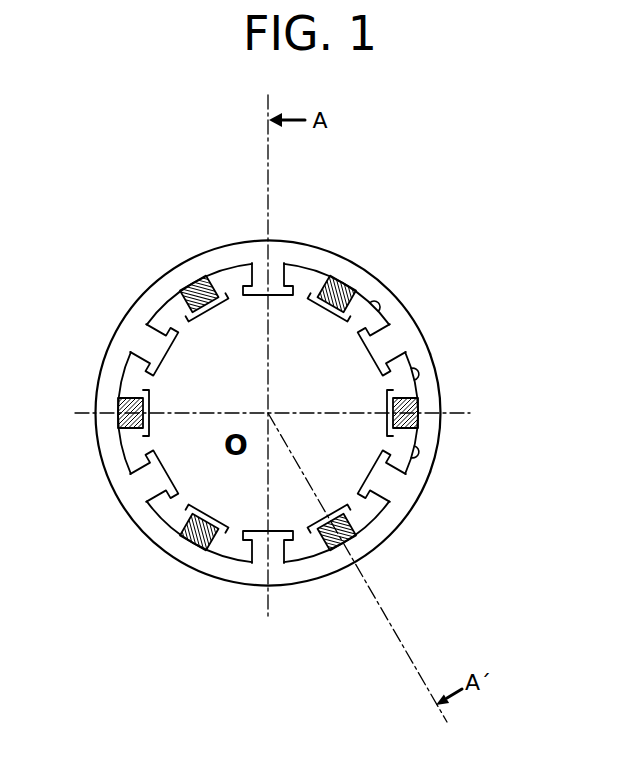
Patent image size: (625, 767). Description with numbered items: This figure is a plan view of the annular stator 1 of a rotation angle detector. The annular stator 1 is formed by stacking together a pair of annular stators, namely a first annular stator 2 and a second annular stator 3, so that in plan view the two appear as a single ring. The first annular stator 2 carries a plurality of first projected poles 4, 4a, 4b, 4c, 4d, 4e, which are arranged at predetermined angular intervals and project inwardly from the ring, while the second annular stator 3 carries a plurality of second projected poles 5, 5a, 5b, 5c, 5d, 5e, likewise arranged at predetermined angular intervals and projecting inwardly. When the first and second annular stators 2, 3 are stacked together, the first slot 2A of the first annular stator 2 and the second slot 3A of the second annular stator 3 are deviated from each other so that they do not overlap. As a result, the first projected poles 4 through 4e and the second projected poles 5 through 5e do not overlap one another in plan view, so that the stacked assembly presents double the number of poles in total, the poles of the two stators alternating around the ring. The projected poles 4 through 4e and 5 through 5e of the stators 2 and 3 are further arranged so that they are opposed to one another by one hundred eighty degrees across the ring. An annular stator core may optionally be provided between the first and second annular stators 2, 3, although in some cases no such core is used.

The annular stator 1 is at (361, 253).
The first annular stator 2 is at (305, 581).
The first slot 2A is at (412, 383).
The second annular stator 3 is at (419, 450).
The second slot 3A is at (379, 313).
The first projected pole 4 is at (278, 268).
The first projected pole 4a is at (394, 343).
The first projected pole 4b is at (397, 483).
The first projected pole 4c is at (256, 581).
The first projected pole 4d is at (146, 483).
The first projected pole 4e is at (146, 342).
The second projected pole 5 is at (349, 279).
The second projected pole 5a is at (421, 399).
The second projected pole 5b is at (354, 553).
The second projected pole 5c is at (192, 547).
The second projected pole 5d is at (120, 400).
The second projected pole 5e is at (196, 290).